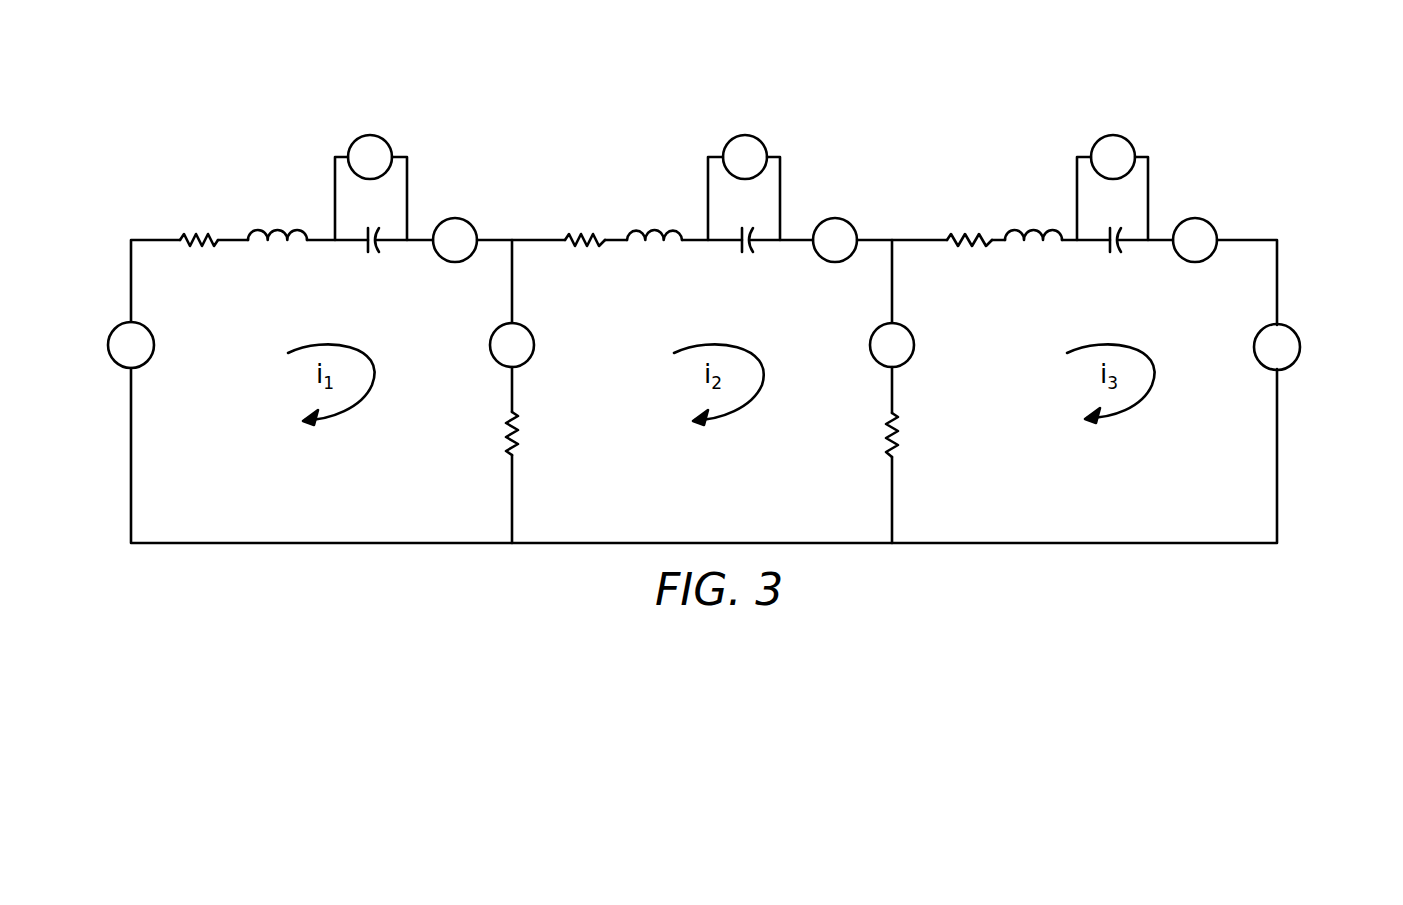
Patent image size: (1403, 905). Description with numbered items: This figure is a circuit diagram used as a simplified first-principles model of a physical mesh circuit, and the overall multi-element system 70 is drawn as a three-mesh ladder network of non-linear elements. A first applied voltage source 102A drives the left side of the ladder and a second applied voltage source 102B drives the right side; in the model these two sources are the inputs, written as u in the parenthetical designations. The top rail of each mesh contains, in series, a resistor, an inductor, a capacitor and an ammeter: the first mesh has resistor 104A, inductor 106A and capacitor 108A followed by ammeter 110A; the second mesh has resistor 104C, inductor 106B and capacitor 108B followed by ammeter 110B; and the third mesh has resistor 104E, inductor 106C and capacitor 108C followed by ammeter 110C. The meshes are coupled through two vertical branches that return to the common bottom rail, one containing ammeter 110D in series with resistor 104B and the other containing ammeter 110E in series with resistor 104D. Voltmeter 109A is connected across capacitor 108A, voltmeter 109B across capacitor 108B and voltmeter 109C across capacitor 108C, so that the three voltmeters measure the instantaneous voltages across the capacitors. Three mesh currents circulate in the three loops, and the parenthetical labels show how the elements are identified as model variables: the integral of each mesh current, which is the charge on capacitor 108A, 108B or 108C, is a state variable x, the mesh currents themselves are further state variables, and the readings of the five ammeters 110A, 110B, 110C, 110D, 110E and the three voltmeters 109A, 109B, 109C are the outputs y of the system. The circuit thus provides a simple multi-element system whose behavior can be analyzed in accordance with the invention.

The electrical circuit network 70 is at (313, 50).
The voltage source 102A is at (154, 346).
The voltage source 102B is at (1300, 348).
The resistor 104A is at (213, 248).
The resistor 104B is at (517, 435).
The resistor 104C is at (600, 248).
The resistor 104D is at (896, 434).
The resistor 104E is at (972, 248).
The inductor 106A is at (276, 250).
The inductor 106B is at (633, 230).
The inductor 106C is at (1033, 237).
The capacitor 108A is at (380, 254).
The capacitor 108B is at (753, 251).
The capacitor 108C is at (1110, 256).
The voltmeter 109A is at (385, 140).
The voltmeter 109B is at (760, 140).
The voltmeter 109C is at (1128, 140).
The ammeter 110A is at (467, 221).
The ammeter 110B is at (847, 221).
The ammeter 110C is at (1200, 218).
The ammeter 110D is at (534, 341).
The ammeter 110E is at (914, 343).